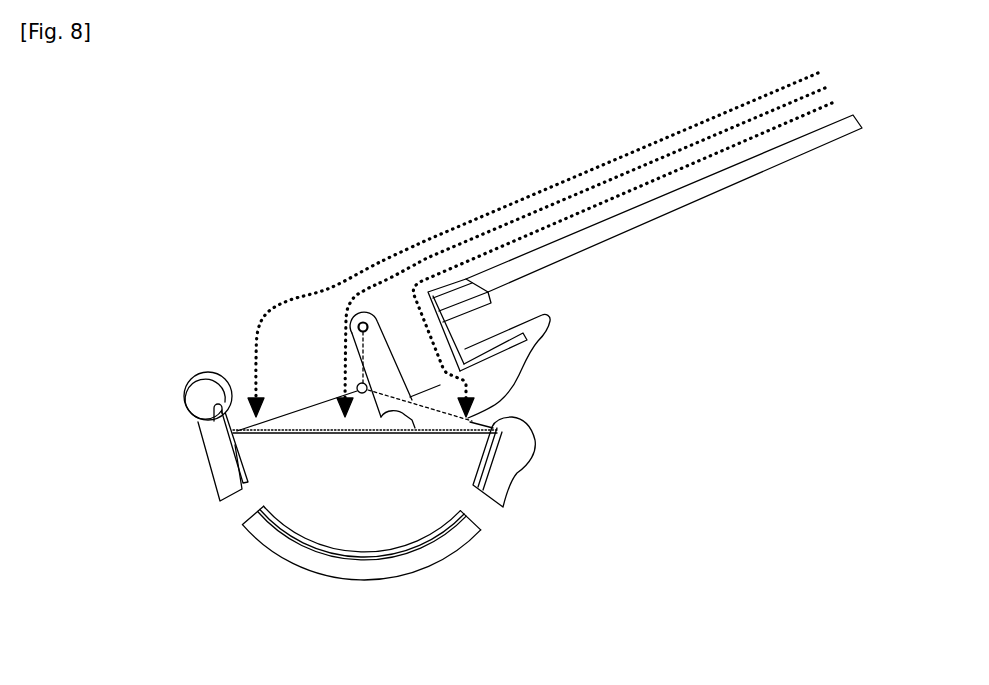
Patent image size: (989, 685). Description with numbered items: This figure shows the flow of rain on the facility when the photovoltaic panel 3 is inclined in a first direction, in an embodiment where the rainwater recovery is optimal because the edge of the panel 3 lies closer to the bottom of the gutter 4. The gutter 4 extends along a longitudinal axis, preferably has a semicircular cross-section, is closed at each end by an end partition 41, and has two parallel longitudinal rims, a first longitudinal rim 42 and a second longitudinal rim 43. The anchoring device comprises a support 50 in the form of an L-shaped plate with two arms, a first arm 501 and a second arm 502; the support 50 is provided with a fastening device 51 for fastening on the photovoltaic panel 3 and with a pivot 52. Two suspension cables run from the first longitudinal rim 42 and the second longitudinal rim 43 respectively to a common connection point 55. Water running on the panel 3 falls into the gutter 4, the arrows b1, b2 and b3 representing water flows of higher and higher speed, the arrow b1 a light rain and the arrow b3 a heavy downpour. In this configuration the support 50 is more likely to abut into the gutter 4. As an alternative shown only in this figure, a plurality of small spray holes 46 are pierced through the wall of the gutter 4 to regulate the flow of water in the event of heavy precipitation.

The photovoltaic panel 3 is at (671, 218).
The arrow b1 is at (678, 167).
The arrow b2 is at (623, 172).
The arrow b3 is at (575, 173).
The gutter 4 is at (275, 594).
The end partition 41 is at (374, 499).
The first longitudinal rim 42 is at (185, 398).
The second longitudinal rim 43 is at (518, 435).
The spray holes 46 is at (227, 524).
The support 50 is at (412, 448).
The fastening device 51 is at (490, 317).
The pivot 52 is at (352, 333).
The connection point 55 is at (362, 393).
The first arm 501 is at (375, 369).
The second arm 502 is at (495, 390).